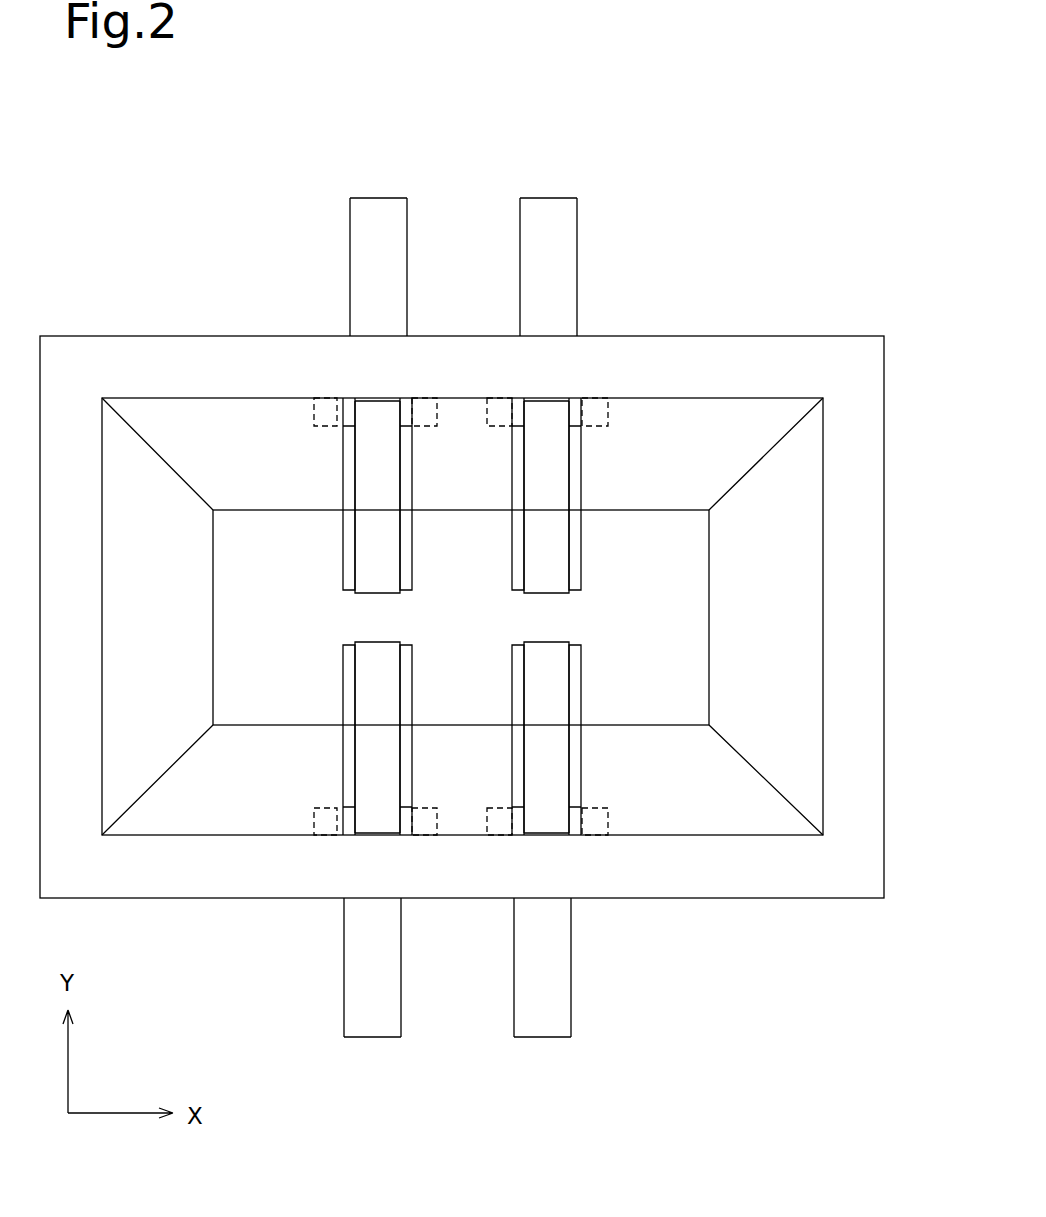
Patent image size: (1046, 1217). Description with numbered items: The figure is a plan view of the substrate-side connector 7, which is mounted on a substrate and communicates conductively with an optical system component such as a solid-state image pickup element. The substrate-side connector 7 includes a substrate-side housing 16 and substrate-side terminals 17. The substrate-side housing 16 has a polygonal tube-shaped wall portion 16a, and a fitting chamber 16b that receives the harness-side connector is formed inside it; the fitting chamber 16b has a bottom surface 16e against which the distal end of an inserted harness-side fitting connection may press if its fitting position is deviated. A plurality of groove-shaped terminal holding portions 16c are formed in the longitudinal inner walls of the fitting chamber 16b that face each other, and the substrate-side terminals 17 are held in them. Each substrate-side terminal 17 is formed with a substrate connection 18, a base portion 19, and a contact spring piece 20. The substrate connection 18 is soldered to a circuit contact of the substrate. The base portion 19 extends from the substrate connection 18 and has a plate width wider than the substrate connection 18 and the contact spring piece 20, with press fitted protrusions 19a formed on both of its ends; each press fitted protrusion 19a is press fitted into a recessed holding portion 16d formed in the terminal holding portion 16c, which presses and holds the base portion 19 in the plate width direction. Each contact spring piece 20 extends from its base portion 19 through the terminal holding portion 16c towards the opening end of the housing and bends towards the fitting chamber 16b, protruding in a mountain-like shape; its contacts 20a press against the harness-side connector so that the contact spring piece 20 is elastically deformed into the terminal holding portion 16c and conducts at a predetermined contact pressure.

The substrate-side connector 7 is at (712, 157).
The substrate-side housing 16 is at (462, 563).
The polygonal tube-shaped wall portion 16a is at (92, 336).
The fitting chamber 16b is at (671, 633).
The terminal holding portion 16c is at (345, 484).
The recessed holding portion 16d is at (328, 396).
The bottom surface 16e is at (275, 614).
The substrate-side terminal 17 is at (350, 245).
The substrate connection 18 is at (377, 213).
The base portion 19 is at (462, 616).
The press fitted protrusion 19a is at (485, 418).
The contact spring piece 20 is at (462, 617).
The contact 20a is at (533, 578).